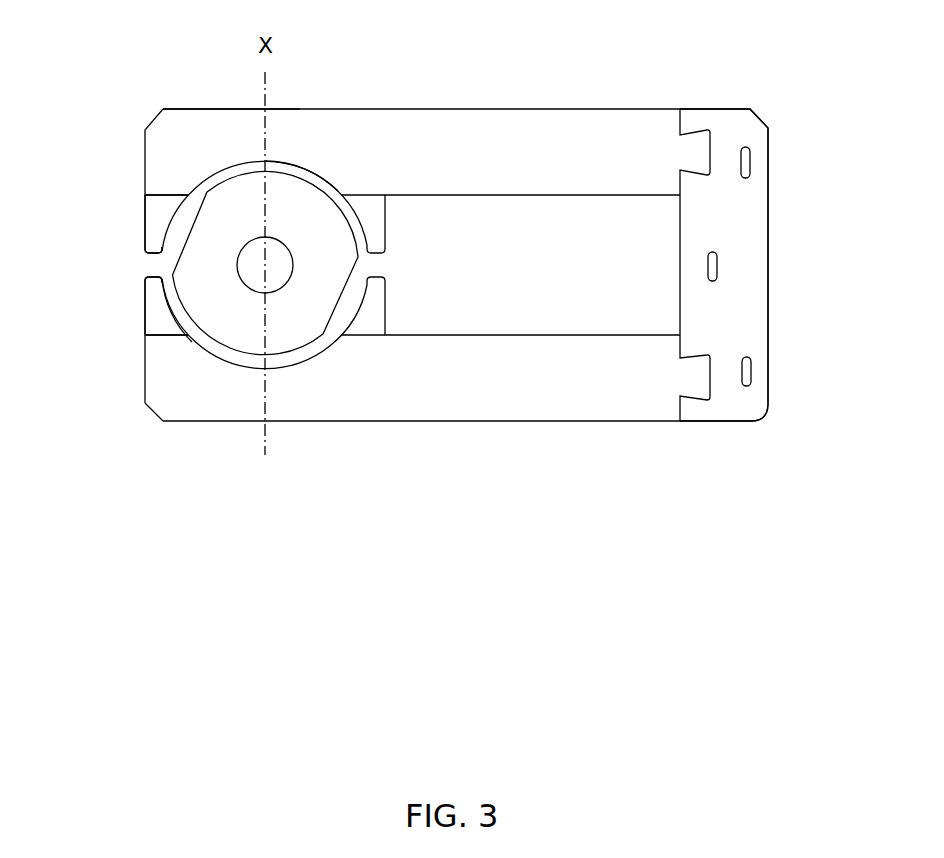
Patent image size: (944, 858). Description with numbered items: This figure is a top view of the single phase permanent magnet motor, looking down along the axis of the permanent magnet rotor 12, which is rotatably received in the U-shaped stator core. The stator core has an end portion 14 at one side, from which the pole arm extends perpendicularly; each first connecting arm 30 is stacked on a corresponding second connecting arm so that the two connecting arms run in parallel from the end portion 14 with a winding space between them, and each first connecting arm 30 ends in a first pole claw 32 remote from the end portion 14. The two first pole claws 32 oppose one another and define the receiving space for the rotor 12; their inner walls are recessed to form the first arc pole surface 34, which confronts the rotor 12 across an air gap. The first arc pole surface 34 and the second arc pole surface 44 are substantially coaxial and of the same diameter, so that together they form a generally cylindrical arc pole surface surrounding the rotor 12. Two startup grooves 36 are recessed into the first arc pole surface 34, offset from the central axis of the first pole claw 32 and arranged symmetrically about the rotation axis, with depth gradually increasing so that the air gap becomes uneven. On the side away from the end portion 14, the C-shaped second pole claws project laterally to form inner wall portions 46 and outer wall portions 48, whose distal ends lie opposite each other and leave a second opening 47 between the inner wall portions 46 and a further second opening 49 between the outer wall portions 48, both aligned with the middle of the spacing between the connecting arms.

The permanent magnet rotor 12 is at (288, 315).
The end portion 14 is at (740, 208).
The first connecting arm 30 is at (518, 142).
The first pole claw 32 is at (240, 140).
The first arc pole surface 34 is at (305, 170).
The startup groove 36 is at (215, 165).
The second arc pole surface 44 is at (172, 318).
The inner wall portion 46 is at (373, 313).
The second opening 47 is at (380, 272).
The outer wall portion 48 is at (153, 215).
The second opening 49 is at (150, 272).